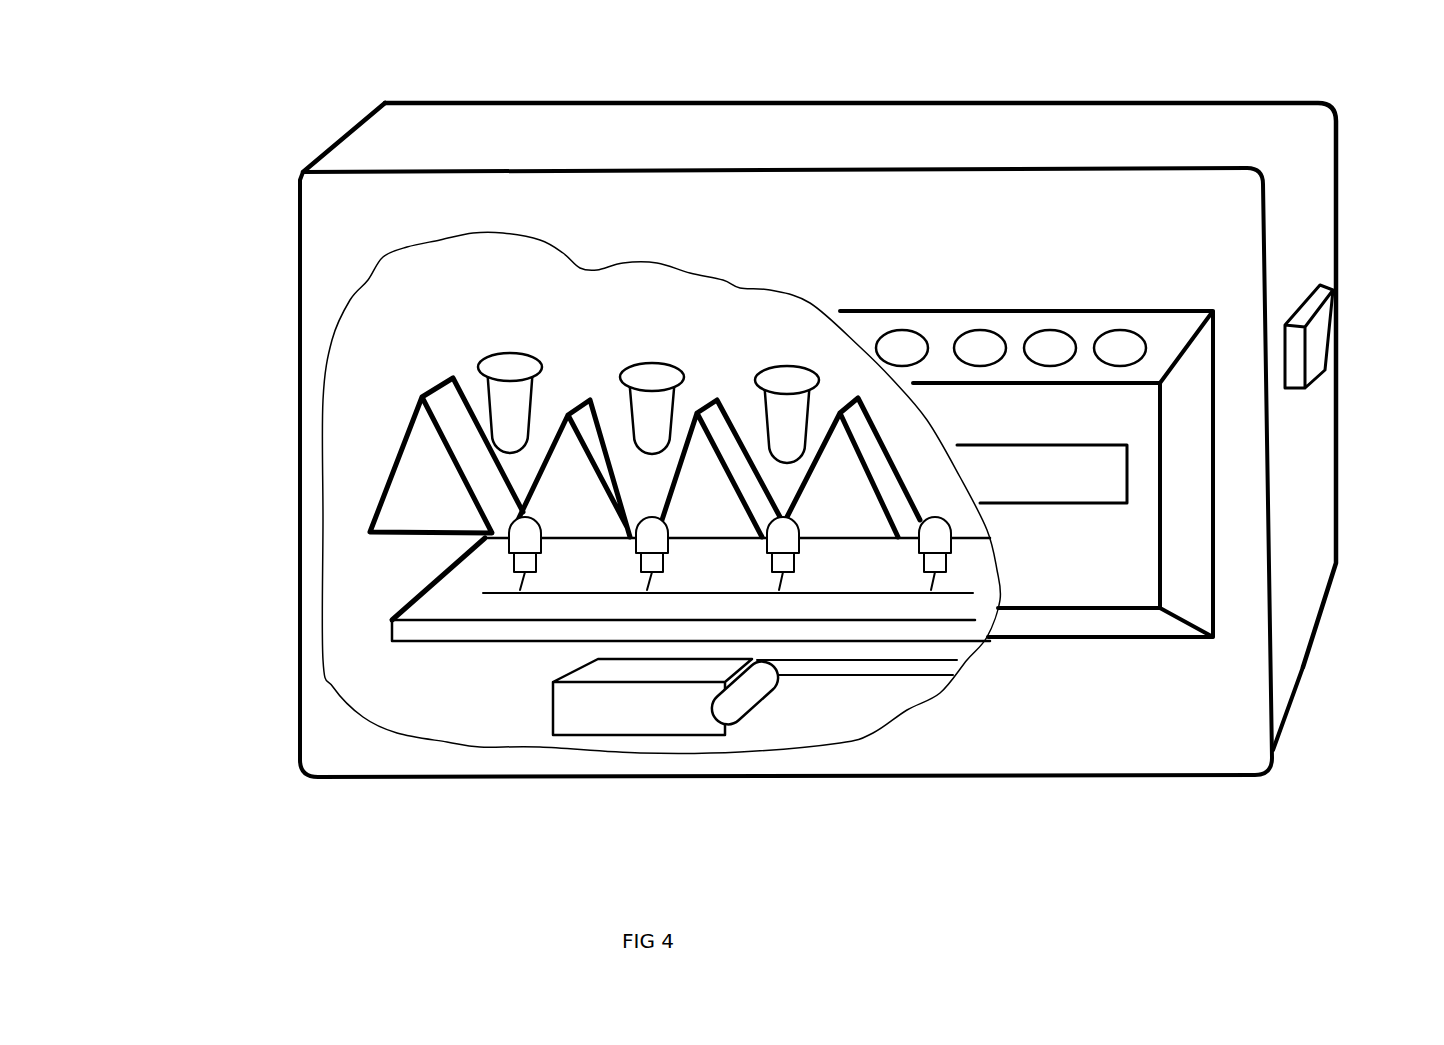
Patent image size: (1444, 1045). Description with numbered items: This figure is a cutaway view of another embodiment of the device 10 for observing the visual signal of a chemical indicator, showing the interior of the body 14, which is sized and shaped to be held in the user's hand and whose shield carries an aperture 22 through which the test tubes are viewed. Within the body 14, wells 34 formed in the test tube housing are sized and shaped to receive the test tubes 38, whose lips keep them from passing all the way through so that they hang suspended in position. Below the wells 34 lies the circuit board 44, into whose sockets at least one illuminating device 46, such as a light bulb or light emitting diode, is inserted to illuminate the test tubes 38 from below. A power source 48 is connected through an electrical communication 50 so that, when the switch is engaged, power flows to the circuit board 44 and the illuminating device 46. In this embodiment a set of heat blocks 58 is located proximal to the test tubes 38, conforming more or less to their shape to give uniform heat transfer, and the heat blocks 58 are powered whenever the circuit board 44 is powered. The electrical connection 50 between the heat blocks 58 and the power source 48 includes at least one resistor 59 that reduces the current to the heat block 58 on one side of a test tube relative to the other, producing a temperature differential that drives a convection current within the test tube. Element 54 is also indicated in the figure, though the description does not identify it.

The device 10 is at (228, 160).
The body 14 is at (1047, 140).
The aperture 22 is at (1300, 668).
The wells 34 is at (1120, 337).
The test tubes 38 is at (505, 362).
The circuit board 44 is at (435, 600).
The illuminating device 46 is at (497, 540).
The power source 48 is at (613, 697).
The electrical communication 50 is at (753, 688).
The support rail 54 is at (898, 597).
The heat blocks 58 is at (407, 502).
The resistor 59 is at (868, 677).